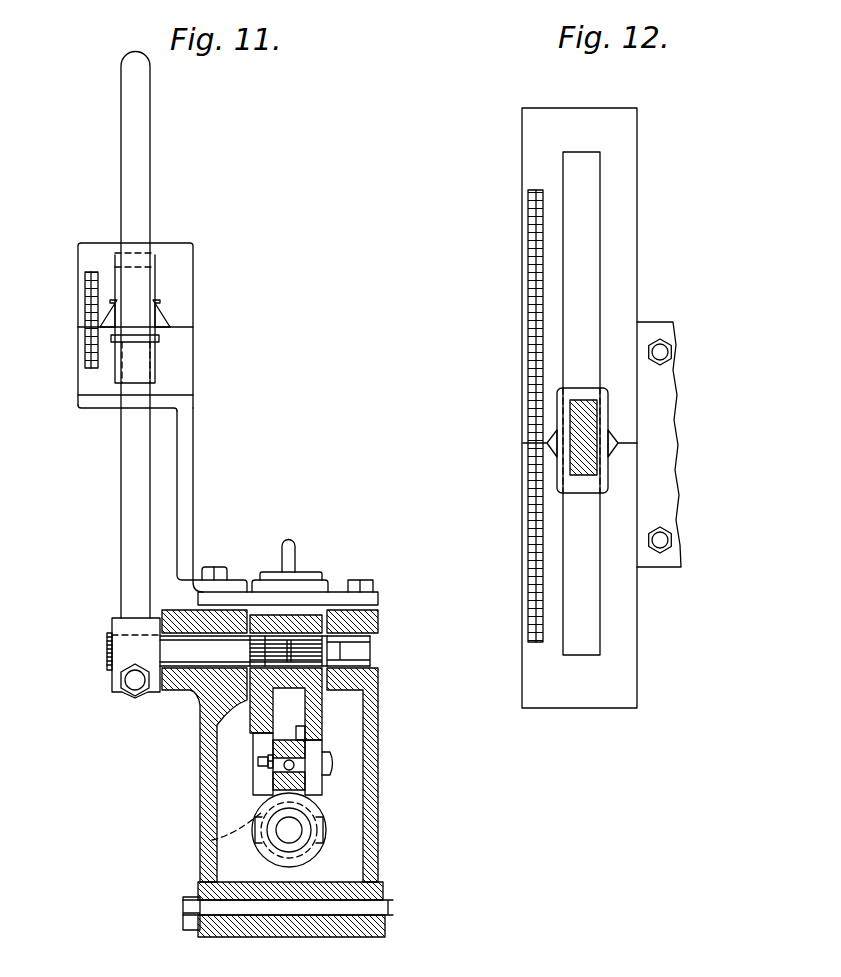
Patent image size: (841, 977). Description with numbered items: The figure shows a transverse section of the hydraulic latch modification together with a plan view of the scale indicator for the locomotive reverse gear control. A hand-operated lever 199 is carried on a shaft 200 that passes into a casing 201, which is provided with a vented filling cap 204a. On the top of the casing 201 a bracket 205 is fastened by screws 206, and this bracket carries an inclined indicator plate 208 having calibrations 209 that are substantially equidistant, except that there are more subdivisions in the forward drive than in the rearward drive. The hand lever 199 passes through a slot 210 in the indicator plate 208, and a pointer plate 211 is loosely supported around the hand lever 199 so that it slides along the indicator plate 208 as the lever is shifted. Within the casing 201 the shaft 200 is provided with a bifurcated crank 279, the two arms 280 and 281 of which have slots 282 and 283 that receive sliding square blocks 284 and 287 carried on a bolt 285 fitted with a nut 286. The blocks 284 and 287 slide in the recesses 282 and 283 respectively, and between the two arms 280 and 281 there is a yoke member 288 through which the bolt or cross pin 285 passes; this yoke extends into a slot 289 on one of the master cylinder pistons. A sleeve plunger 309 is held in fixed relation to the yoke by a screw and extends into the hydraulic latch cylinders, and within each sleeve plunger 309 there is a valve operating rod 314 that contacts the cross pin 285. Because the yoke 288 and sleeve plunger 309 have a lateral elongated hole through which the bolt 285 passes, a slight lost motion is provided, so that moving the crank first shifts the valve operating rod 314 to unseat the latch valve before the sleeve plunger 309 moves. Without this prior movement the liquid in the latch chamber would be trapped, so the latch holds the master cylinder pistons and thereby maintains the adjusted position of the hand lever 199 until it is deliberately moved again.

In FIG. 11, the hand-operated lever 199 is at (140, 132).
In FIG. 12, the hand-operated lever 199 is at (597, 461).
In FIG. 11, the shaft 200 is at (110, 656).
In FIG. 11, the casing 201 is at (378, 872).
In FIG. 11, the vented filling cap 204a is at (297, 568).
In FIG. 11, the bracket 205 is at (190, 462).
In FIG. 12, the bracket 205 is at (668, 433).
In FIG. 11, the screws 206 is at (214, 566).
In FIG. 12, the screws 206 is at (663, 351).
In FIG. 11, the indicator plate 208 is at (177, 290).
In FIG. 12, the indicator plate 208 is at (623, 237).
In FIG. 11, the calibrations 209 is at (92, 300).
In FIG. 12, the calibrations 209 is at (535, 292).
In FIG. 11, the slot 210 is at (158, 358).
In FIG. 12, the slot 210 is at (585, 622).
In FIG. 11, the pointer plate 211 is at (160, 327).
In FIG. 12, the pointer plate 211 is at (567, 483).
In FIG. 11, the bifurcated crank 279 is at (378, 673).
In FIG. 11, the arm 280 is at (257, 710).
In FIG. 11, the arm 281 is at (320, 707).
In FIG. 11, the slot 282 is at (258, 792).
In FIG. 11, the slot 283 is at (316, 793).
In FIG. 11, the sliding square block 284 is at (262, 753).
In FIG. 11, the bolt 285 is at (262, 770).
In FIG. 11, the nut 286 is at (330, 771).
In FIG. 11, the sliding square block 287 is at (305, 750).
In FIG. 11, the yoke member 288 is at (310, 822).
In FIG. 11, the slot 289 is at (278, 852).
In FIG. 11, the sleeve plunger 309 is at (322, 730).
In FIG. 11, the valve operating rod 314 is at (200, 843).